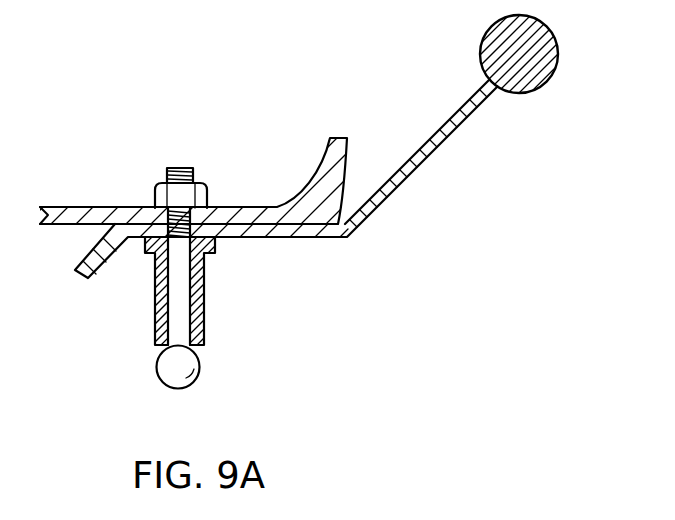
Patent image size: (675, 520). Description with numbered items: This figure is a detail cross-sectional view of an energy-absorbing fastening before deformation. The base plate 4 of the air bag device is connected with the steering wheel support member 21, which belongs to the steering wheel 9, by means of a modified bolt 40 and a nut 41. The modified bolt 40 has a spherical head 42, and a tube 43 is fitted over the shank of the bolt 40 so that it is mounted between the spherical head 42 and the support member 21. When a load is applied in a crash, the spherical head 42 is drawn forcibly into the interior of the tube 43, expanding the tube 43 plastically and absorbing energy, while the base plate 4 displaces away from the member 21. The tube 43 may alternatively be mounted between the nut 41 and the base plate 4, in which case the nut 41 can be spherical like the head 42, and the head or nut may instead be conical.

The base plate 4 is at (88, 214).
The steering wheel 9 is at (552, 55).
The steering wheel support member 21 is at (400, 173).
The modified bolt 40 is at (172, 304).
The nut 41 is at (190, 199).
The spherical head 42 is at (198, 382).
The tube 43 is at (197, 300).